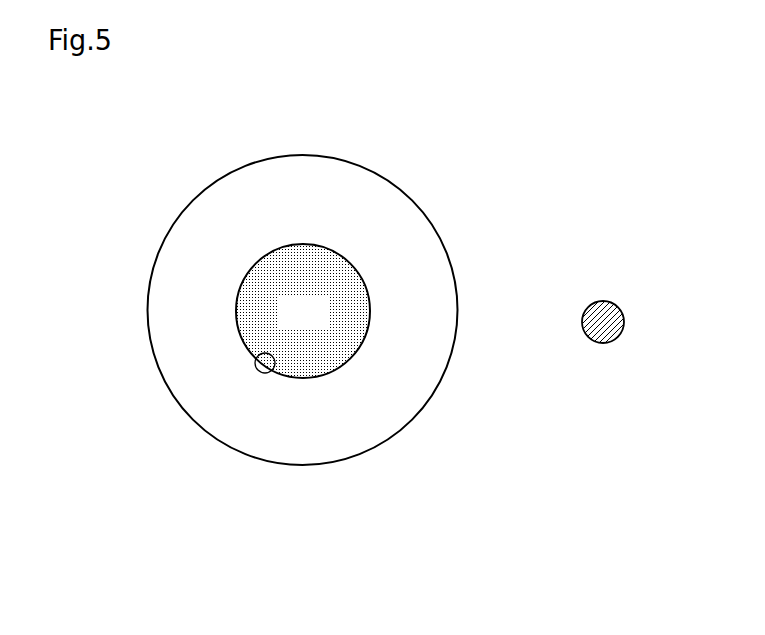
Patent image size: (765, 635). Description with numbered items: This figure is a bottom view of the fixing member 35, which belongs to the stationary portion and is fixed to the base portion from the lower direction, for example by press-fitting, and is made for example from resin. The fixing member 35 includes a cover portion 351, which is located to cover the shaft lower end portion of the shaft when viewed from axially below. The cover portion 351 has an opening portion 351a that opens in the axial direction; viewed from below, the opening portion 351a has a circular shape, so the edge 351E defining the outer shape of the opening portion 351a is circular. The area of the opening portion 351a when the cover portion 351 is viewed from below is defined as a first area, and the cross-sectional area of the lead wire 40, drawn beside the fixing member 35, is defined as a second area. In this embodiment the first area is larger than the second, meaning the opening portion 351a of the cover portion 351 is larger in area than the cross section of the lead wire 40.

The fixing member 35 is at (405, 173).
The cover portion 351 is at (317, 428).
The opening portion 351a is at (235, 335).
The edge 351E is at (254, 362).
The lead wire 40 is at (625, 293).